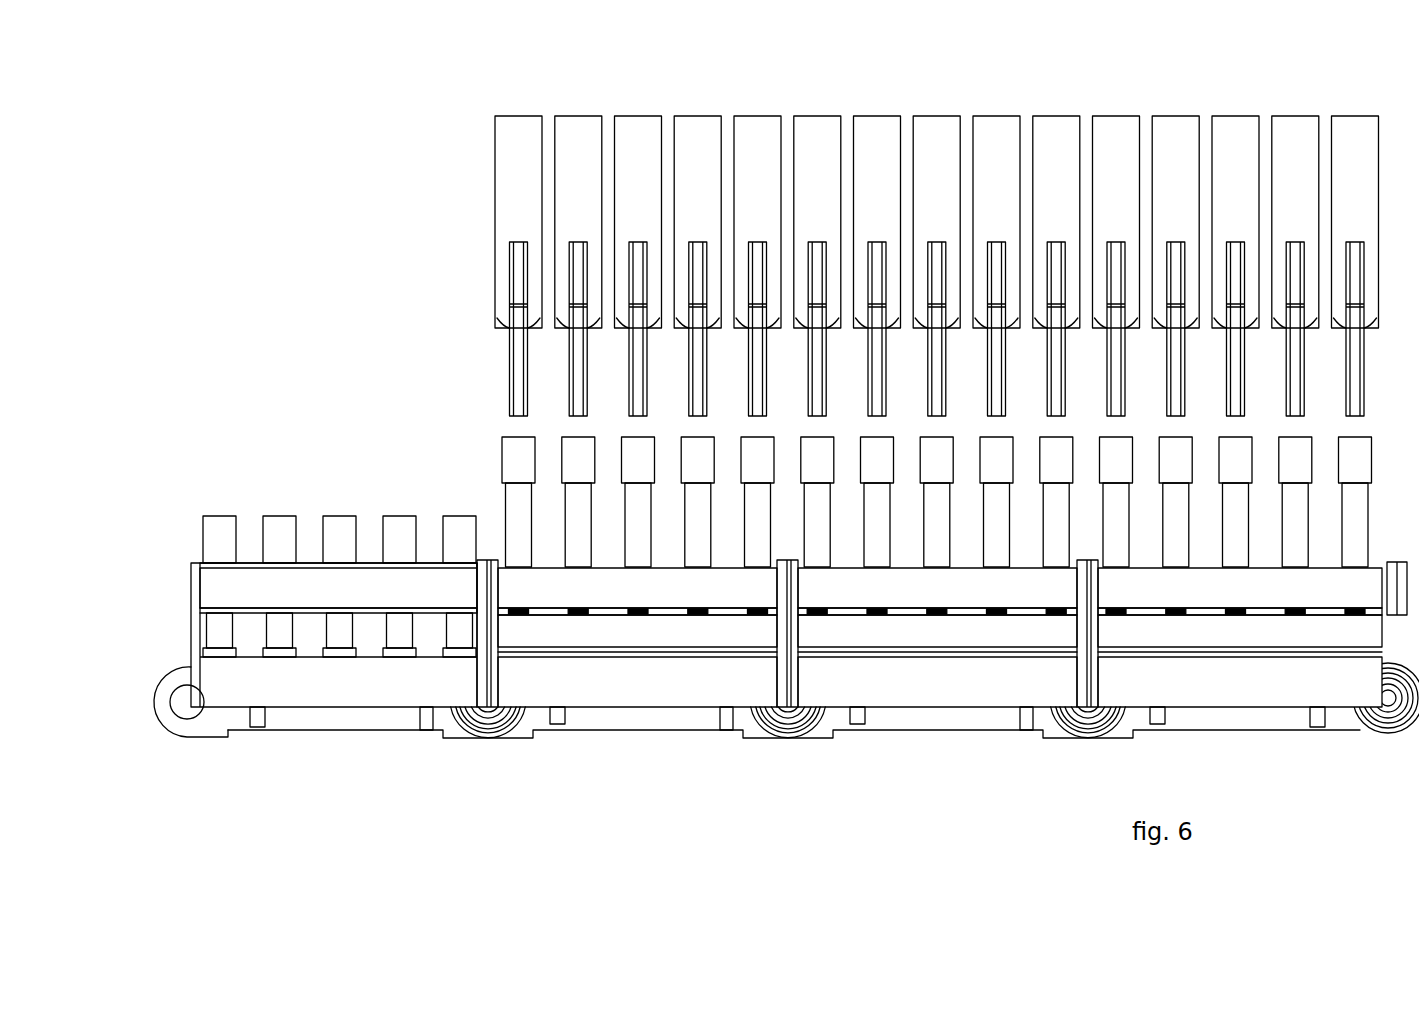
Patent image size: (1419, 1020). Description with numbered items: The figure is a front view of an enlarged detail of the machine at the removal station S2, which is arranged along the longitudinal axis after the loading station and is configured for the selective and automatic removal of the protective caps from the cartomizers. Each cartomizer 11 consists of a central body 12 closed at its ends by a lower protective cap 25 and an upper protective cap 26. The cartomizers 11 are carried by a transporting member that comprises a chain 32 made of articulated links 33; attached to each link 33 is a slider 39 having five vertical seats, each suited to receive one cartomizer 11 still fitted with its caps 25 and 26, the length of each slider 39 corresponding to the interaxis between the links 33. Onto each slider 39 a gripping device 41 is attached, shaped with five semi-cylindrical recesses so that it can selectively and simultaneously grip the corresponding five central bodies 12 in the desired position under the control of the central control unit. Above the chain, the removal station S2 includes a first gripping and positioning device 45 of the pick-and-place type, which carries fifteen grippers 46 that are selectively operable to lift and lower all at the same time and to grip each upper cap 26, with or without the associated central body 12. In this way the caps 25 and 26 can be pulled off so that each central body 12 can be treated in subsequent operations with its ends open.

The removal station S2 is at (480, 78).
The first gripping and positioning device 45 is at (1122, 104).
The grippers 46 is at (518, 368).
The upper protective cap 26 is at (515, 453).
The central body 12 is at (521, 510).
The cartomizer 11 is at (216, 498).
The protective cap 25 is at (210, 652).
The gripping device 41 is at (307, 587).
The slider 39 is at (368, 566).
The chain 32 is at (152, 742).
The articulated links 33 is at (348, 717).